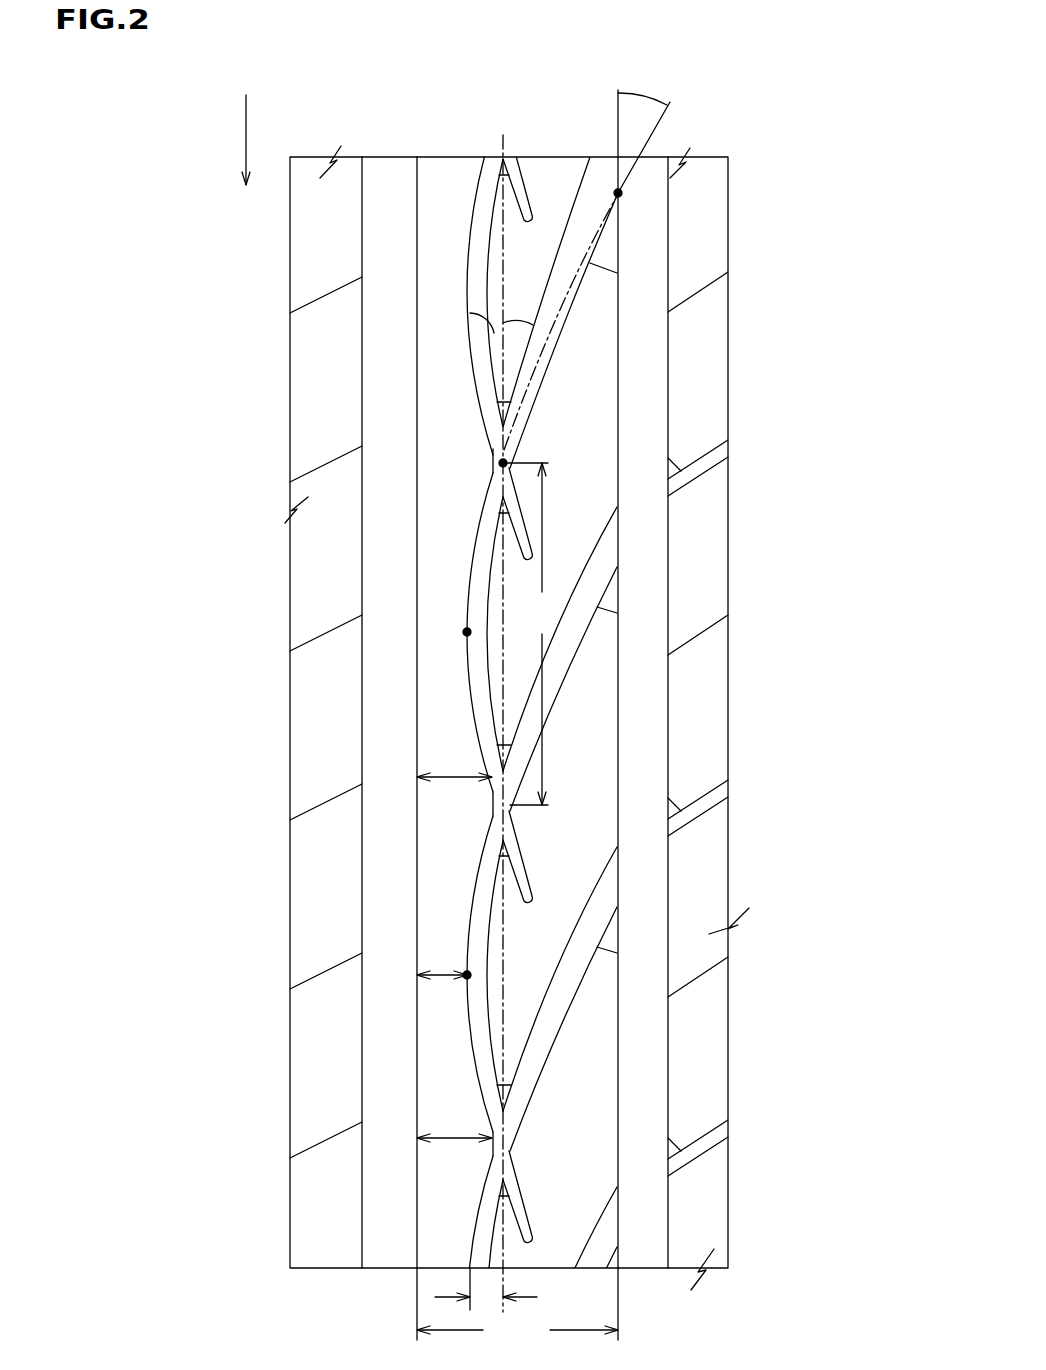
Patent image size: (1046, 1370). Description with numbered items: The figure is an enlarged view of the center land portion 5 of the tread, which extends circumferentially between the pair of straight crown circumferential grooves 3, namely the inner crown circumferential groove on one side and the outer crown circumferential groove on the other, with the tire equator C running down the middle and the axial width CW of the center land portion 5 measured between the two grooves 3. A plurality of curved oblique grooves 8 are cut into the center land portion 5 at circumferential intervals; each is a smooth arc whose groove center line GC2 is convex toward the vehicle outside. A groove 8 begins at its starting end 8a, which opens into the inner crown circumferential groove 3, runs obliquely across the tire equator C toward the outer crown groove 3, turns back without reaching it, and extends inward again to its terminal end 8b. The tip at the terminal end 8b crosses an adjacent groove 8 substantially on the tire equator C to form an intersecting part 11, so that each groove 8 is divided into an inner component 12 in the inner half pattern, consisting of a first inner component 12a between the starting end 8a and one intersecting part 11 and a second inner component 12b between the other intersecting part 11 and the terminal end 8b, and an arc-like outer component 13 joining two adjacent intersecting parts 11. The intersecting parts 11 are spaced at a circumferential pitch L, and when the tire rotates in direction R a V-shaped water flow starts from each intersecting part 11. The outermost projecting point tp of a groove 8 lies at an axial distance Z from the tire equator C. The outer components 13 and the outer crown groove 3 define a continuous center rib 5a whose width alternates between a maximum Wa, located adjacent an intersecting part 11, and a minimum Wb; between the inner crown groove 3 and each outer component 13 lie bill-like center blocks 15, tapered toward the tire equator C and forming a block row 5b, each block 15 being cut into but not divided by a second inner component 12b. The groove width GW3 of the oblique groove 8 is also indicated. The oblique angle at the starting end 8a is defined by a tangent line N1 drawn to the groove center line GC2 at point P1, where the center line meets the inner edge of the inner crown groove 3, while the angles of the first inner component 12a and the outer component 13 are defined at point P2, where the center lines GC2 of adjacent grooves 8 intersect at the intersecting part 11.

The crown circumferential groove 3 is at (387, 1244).
The center land portion 5 is at (568, 78).
The center rib 5a is at (459, 154).
The block row 5b is at (560, 154).
The curved oblique groove 8 is at (522, 709).
The starting end 8a is at (624, 203).
The terminal end 8b is at (534, 903).
The intersecting part 11 is at (489, 462).
The inner component 12 is at (522, 709).
The first inner component 12a is at (574, 311).
The second inner component 12b is at (521, 854).
The outer component 13 is at (469, 247).
The center block 15 is at (601, 378).
The outermost projecting point tp is at (466, 630).
The intersecting point P1 is at (622, 193).
The intersecting point P2 is at (507, 461).
The tangent line N1 is at (666, 119).
The groove center line GC2 is at (592, 252).
The groove width GW3 is at (617, 300).
The tire equator C is at (502, 709).
The pitch L is at (525, 634).
The maximum axial width Wa is at (454, 941).
The minimum axial width Wb is at (442, 955).
The axial distance Z is at (486, 1291).
The axial width CW is at (517, 1307).
The rotation direction R is at (248, 123).